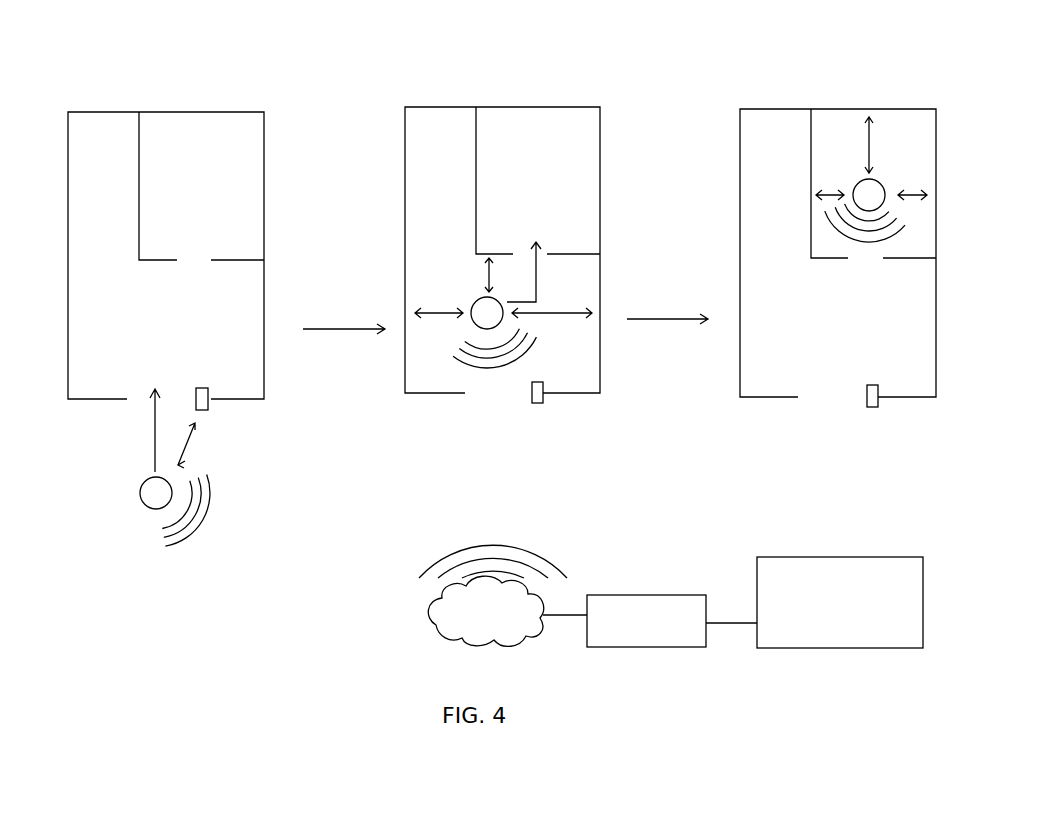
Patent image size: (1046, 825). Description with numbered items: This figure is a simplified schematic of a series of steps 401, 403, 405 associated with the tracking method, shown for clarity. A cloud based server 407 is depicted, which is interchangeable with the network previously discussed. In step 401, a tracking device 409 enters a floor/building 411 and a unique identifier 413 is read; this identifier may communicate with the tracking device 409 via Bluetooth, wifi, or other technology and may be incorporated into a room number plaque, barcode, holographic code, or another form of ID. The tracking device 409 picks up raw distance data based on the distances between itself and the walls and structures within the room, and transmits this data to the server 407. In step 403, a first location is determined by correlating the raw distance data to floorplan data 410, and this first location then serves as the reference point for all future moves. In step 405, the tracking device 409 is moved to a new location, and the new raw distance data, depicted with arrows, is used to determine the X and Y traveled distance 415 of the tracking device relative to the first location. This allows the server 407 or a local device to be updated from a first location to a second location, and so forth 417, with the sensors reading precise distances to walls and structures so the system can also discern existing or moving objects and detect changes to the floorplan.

The first step 401 is at (127, 58).
The second step 403 is at (472, 48).
The third step 405 is at (839, 60).
The cloud based server 407 is at (430, 624).
The tracking device 409 is at (141, 493).
The floorplan data 410 is at (658, 595).
The floor/building 411 is at (264, 160).
The unique identifier 413 is at (208, 404).
The traveled distance 415 is at (536, 291).
The location updates 417 is at (837, 557).